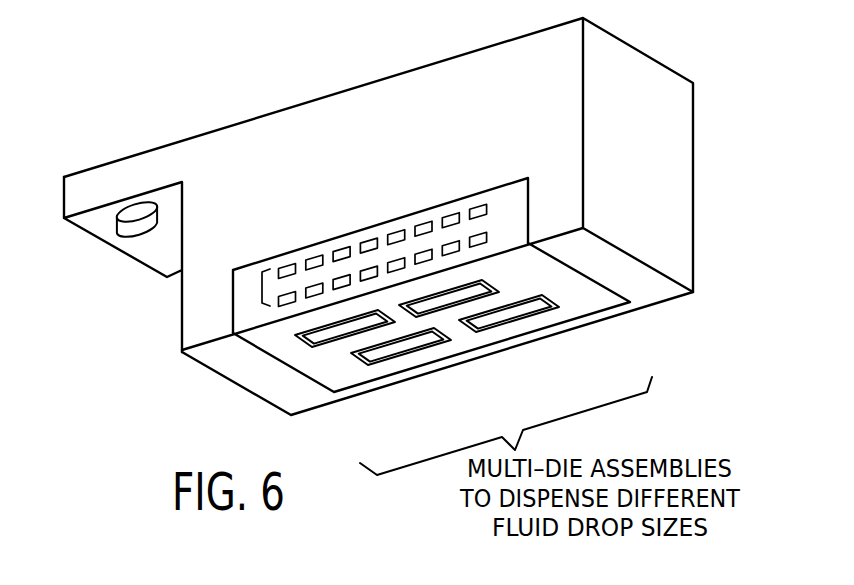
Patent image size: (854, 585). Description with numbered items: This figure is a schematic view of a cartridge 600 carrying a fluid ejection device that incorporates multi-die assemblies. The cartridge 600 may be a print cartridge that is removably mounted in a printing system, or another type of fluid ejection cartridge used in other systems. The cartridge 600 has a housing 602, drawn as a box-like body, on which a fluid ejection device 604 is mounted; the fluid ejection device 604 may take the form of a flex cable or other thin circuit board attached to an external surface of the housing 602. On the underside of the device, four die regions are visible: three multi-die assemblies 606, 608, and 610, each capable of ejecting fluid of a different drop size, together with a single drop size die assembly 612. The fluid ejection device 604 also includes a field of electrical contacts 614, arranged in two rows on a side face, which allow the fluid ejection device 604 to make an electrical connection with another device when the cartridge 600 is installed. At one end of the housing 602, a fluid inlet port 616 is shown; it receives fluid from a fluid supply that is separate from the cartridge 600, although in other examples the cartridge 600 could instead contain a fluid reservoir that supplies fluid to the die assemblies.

The cartridge 600 is at (470, 48).
The housing 602 is at (307, 130).
The fluid ejection device 604 is at (265, 353).
The multi-die assembly 606 is at (327, 343).
The multi-die assembly 608 is at (397, 358).
The multi-die assembly 610 is at (437, 312).
The single drop size die assembly 612 is at (517, 322).
The electrical contacts 614 is at (260, 287).
The fluid inlet port 616 is at (138, 238).